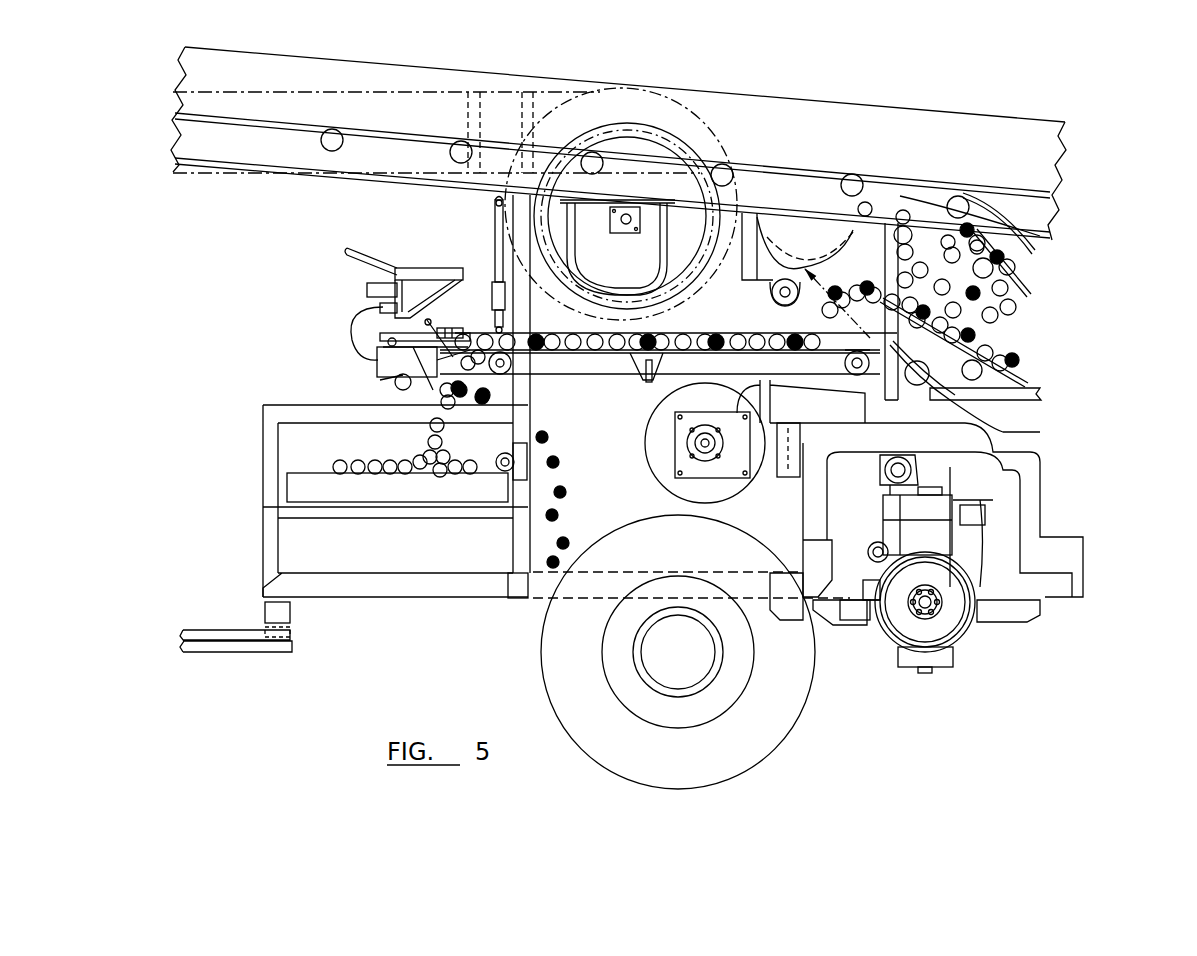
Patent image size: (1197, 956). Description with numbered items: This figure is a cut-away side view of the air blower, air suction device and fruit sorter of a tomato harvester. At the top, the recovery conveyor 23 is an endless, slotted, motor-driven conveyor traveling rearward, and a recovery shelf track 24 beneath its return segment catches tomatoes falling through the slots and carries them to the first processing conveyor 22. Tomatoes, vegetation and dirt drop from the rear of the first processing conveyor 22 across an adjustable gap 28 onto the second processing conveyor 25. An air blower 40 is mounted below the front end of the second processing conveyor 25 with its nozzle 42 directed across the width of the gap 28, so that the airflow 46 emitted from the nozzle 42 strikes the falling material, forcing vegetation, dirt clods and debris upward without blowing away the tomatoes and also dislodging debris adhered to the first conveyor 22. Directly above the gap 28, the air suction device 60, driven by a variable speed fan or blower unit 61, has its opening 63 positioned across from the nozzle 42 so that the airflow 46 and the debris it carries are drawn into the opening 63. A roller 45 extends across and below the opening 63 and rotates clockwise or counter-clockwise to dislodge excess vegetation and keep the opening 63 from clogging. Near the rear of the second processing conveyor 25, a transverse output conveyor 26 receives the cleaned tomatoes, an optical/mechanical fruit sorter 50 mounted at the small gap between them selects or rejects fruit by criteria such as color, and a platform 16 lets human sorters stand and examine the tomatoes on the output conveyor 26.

The platform 16 is at (210, 628).
The first processing conveyor 22 is at (1030, 377).
The recovery conveyor 23 is at (1017, 222).
The recovery shelf track 24 is at (810, 205).
The second processing conveyor 25 is at (552, 340).
The output conveyor 26 is at (300, 488).
The gap 28 is at (880, 340).
The air blower 40 is at (717, 495).
The nozzle 42 is at (870, 380).
The roller 45 is at (885, 293).
The airflow 46 is at (1000, 235).
The optical/mechanical fruit sorter 50 is at (398, 270).
The air suction device 60 is at (702, 118).
The variable speed fan or blower unit 61 is at (630, 143).
The opening 63 is at (738, 295).